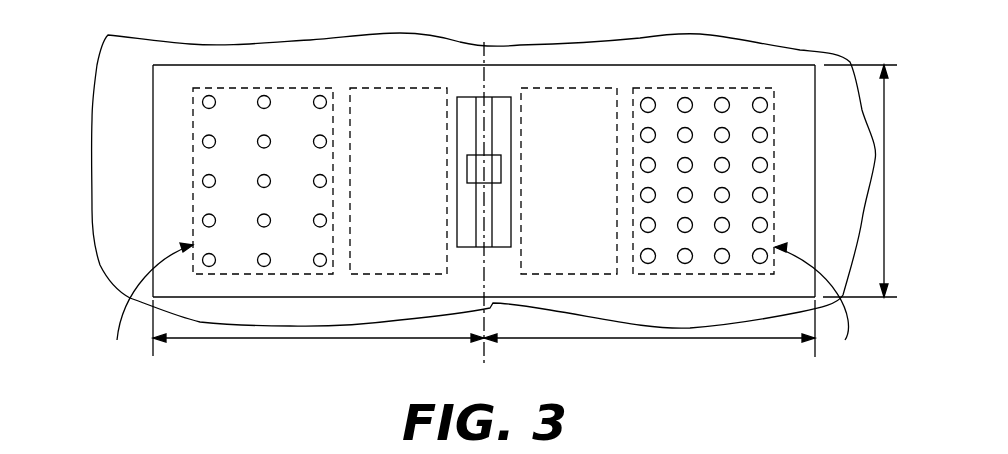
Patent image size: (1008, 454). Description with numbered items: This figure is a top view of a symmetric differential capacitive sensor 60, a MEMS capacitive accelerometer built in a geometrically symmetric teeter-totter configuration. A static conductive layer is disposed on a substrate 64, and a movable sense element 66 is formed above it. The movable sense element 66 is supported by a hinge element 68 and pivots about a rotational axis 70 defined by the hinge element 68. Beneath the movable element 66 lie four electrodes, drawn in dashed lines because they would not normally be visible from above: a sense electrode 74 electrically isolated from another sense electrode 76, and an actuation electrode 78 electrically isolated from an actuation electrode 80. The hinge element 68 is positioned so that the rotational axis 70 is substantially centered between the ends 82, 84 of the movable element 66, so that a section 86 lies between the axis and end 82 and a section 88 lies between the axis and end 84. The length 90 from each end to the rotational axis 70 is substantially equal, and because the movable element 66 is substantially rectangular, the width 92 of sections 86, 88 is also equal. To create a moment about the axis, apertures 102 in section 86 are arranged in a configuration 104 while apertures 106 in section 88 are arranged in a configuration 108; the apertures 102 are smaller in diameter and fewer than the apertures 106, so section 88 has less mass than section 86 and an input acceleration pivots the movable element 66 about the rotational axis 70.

The symmetric differential capacitive sensor 60 is at (333, 400).
The substrate 64 is at (105, 105).
The movable sense element 66 is at (189, 68).
The hinge element 68 is at (501, 160).
The rotational axis 70 is at (484, 72).
The sense electrode 74 is at (400, 88).
The sense electrode 76 is at (588, 88).
The actuation electrode 78 is at (261, 88).
The actuation electrode 80 is at (713, 88).
The end 82 is at (153, 187).
The end 84 is at (816, 167).
The section 86 is at (347, 288).
The section 88 is at (613, 288).
The length 90 is at (267, 338).
The width 92 is at (885, 232).
The apertures 102 is at (208, 138).
The configuration 104 is at (146, 303).
The apertures 106 is at (755, 100).
The configuration 108 is at (828, 304).